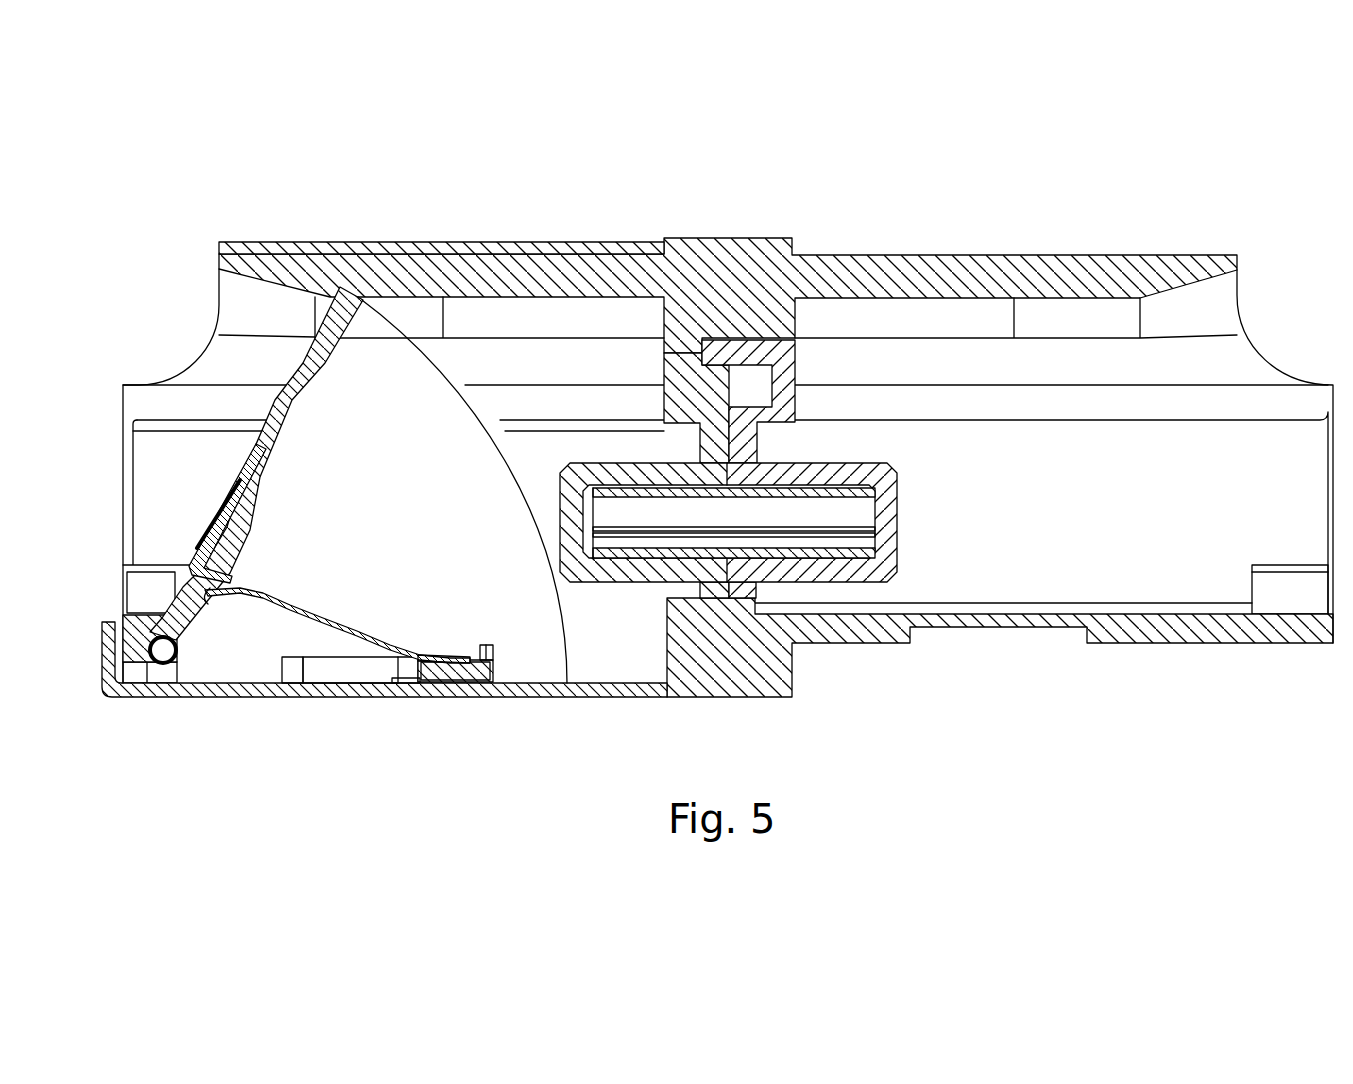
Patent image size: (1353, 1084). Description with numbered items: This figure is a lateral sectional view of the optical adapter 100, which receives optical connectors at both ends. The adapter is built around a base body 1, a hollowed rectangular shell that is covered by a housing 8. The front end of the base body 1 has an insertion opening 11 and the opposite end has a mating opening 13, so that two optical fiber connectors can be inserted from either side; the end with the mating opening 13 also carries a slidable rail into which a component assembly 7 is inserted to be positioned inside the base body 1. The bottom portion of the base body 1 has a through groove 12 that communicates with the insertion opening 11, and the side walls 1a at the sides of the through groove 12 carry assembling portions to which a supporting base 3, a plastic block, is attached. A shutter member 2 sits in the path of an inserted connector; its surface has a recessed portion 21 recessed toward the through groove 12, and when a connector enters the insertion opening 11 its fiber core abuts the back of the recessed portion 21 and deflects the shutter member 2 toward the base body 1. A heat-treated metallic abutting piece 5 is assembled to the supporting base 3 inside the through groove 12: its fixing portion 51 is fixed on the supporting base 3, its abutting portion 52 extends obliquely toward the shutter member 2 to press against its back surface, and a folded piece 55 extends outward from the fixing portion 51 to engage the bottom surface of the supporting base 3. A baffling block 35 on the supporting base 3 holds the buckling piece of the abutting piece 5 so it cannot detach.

The optical adapter 100 is at (688, 152).
The base body 1 is at (925, 267).
The side wall 1a is at (138, 650).
The housing 8 is at (435, 250).
The insertion opening 11 is at (212, 360).
The mating opening 13 is at (1210, 358).
The through groove 12 is at (590, 665).
The shutter member 2 is at (257, 443).
The recessed portion 21 is at (226, 524).
The supporting base 3 is at (443, 668).
The baffling block 35 is at (488, 650).
The abutting piece 5 is at (322, 612).
The fixing portion 51 is at (465, 657).
The abutting portion 52 is at (207, 605).
The bottom plate 55 is at (422, 685).
The magnet assembly 7 is at (822, 575).